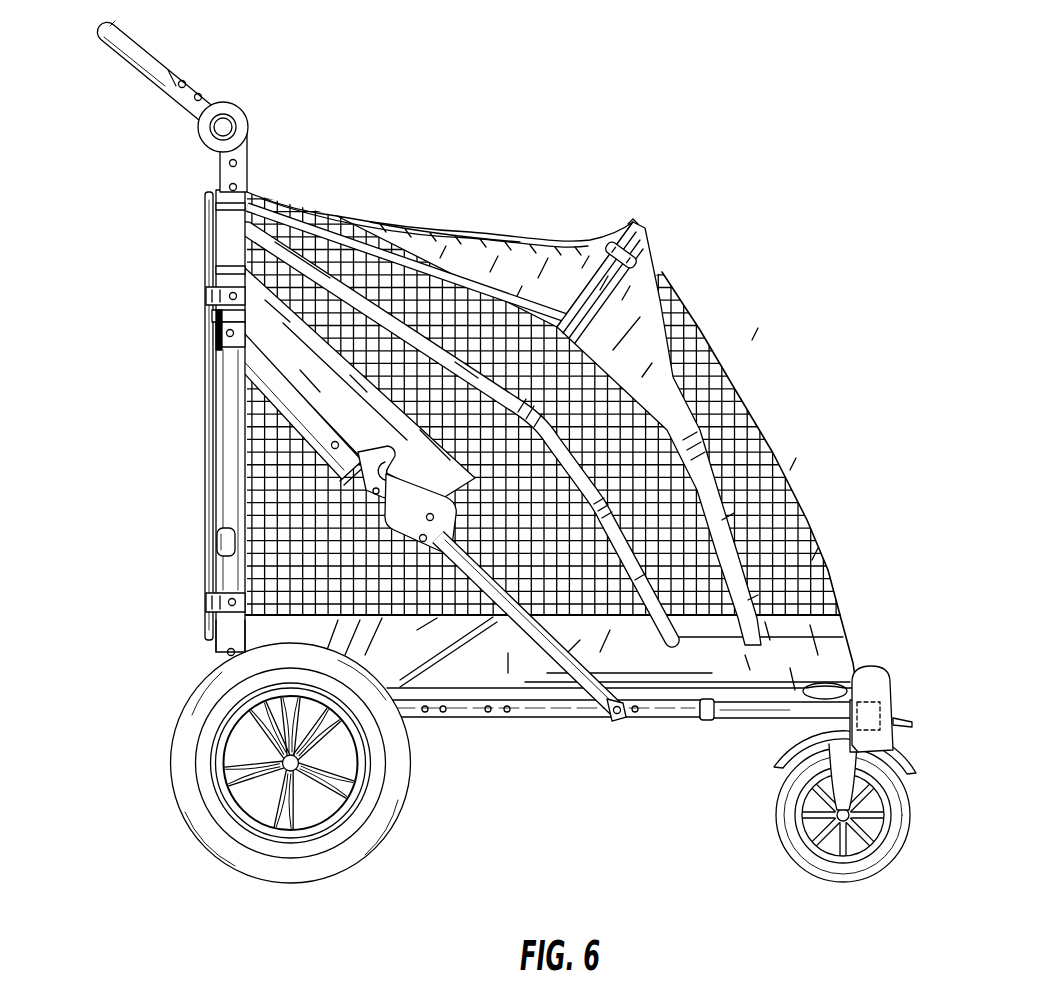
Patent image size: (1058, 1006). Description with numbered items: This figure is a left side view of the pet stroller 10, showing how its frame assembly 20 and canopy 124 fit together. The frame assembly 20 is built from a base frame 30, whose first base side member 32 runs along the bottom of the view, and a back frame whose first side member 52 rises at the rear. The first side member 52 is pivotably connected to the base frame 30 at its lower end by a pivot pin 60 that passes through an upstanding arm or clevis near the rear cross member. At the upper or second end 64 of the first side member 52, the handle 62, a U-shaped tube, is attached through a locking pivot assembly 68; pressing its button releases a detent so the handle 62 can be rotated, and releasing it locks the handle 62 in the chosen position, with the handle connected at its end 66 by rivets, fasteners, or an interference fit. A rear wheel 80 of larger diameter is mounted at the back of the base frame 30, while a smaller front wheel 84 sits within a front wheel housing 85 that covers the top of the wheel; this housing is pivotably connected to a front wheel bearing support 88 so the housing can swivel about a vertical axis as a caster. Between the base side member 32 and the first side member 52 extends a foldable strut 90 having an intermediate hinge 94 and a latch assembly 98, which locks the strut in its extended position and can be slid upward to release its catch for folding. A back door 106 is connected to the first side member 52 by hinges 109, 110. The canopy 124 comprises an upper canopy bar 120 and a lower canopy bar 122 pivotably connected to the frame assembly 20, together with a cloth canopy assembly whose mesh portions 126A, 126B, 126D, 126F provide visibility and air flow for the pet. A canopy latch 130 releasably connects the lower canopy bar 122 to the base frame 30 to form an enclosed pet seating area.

The pet stroller 10 is at (700, 124).
The frame assembly 20 is at (180, 599).
The base frame 30 is at (692, 730).
The first base side member 32 is at (490, 718).
The first side member 52 is at (229, 533).
The pivot pin 60 is at (230, 648).
The handle 62 is at (102, 38).
The second end 64 is at (248, 160).
The end 66 is at (212, 87).
The locking pivot assembly 68 is at (203, 130).
The rear wheel 80 is at (296, 884).
The front wheel 84 is at (850, 883).
The front wheel housing 85 is at (785, 752).
The front wheel bearing support 88 is at (892, 688).
The foldable strut 90 is at (564, 668).
The intermediate hinge 94 is at (432, 540).
The latch assembly 98 is at (377, 492).
The back door 106 is at (195, 342).
The hinge 109 is at (222, 297).
The hinge 110 is at (206, 603).
The upper canopy bar 120 is at (632, 258).
The lower canopy bar 122 is at (832, 687).
The canopy 124 is at (628, 210).
The mesh portion 126A is at (305, 477).
The mesh portion 126B is at (483, 235).
The mesh portion 126D is at (740, 390).
The mesh portion 126F is at (668, 480).
The canopy latch 130 is at (908, 728).